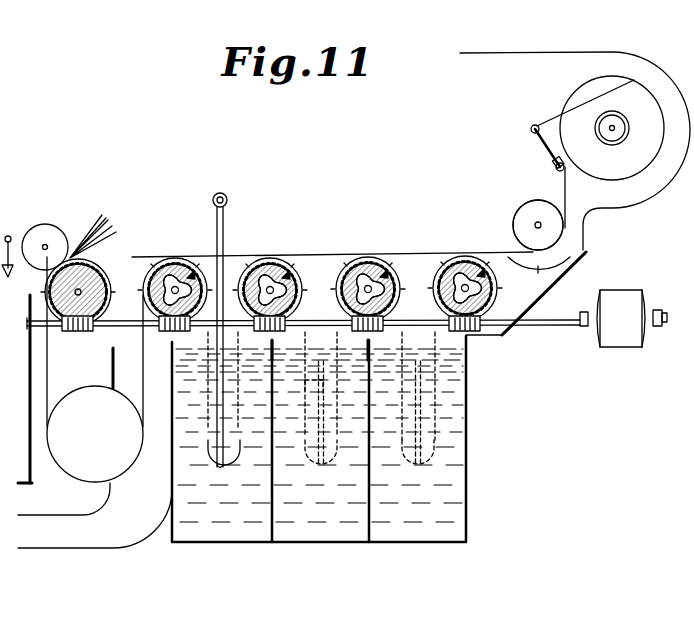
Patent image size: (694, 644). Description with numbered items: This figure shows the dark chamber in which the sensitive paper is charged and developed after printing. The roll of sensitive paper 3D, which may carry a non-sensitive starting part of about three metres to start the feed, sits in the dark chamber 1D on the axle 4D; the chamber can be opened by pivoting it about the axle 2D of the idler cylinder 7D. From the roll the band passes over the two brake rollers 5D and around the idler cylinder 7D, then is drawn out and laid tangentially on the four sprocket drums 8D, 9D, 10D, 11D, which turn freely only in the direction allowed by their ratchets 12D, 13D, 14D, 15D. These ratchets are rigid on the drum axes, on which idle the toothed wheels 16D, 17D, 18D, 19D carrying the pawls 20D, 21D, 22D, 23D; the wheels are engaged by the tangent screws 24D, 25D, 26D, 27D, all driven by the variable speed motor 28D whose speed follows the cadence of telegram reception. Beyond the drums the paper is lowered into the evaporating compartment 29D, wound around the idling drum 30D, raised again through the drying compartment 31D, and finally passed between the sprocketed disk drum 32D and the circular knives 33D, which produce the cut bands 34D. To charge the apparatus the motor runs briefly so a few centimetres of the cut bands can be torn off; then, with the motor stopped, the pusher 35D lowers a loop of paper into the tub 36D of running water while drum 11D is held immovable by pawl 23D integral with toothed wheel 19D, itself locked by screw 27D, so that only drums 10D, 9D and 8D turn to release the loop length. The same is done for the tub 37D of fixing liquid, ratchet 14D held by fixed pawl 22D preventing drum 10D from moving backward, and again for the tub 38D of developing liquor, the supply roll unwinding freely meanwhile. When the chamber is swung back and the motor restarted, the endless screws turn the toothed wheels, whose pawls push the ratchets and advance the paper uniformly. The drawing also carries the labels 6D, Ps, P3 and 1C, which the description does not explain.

The dark chamber 1D is at (575, 141).
The axle 2D is at (539, 236).
The roll of sensitive paper 3D is at (620, 82).
The axle 4D is at (627, 124).
The brake rollers 5D is at (530, 128).
The frame member 6D is at (577, 197).
The idler cylinder 7D is at (537, 200).
The sprocket drum 8D is at (458, 257).
The sprocket drum 9D is at (363, 257).
The sprocket drum 10D is at (265, 258).
The sprocket drum 11D is at (152, 262).
The ratchet 12D is at (455, 266).
The ratchet 13D is at (357, 266).
The ratchet 14D is at (255, 266).
The ratchet 15D is at (166, 297).
The toothed wheel 16D is at (491, 270).
The toothed wheel 17D is at (400, 271).
The toothed wheel 18D is at (292, 284).
The toothed wheel 19D is at (168, 263).
The pawl 20D is at (474, 264).
The pawl 21D is at (376, 264).
The pawl 22D is at (279, 268).
The pawl 23D is at (188, 270).
The tangent screw 24D is at (464, 330).
The tangent screw 25D is at (370, 332).
The tangent screw 26D is at (275, 332).
The tangent screw 27D is at (170, 332).
The variable speed motor 28D is at (623, 318).
The evaporating compartment 29D is at (95, 445).
The idling drum 30D is at (95, 434).
The drying compartment 31D is at (64, 499).
The disk drum with sprockets 32D is at (96, 266).
The circular knives 33D is at (45, 247).
The cut bands 34D is at (100, 228).
The pusher 35D is at (220, 193).
The tub 36D is at (222, 451).
The tub 37D is at (320, 451).
The tub 38D is at (417, 448).
The pressure Ps is at (48, 392).
The pressure P3 is at (9, 267).
The frame 1C is at (7, 212).